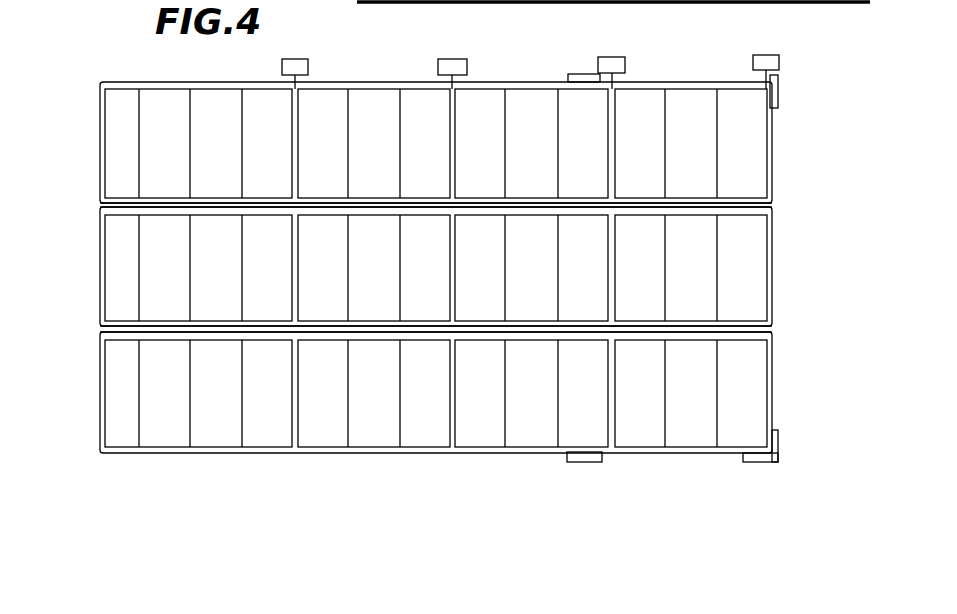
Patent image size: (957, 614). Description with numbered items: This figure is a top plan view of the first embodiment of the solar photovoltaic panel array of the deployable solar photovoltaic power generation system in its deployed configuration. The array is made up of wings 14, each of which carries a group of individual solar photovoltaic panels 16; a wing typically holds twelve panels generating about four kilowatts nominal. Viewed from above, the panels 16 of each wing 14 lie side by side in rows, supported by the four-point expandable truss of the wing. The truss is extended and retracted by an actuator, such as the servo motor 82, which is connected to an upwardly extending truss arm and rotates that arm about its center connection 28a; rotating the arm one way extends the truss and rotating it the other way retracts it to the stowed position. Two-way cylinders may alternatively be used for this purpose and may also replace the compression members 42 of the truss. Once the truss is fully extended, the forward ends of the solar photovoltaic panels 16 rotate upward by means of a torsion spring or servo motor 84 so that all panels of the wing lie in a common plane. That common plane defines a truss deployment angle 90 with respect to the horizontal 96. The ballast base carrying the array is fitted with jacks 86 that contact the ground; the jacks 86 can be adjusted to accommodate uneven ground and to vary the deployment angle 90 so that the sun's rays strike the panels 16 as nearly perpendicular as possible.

The wing 14 is at (96, 117).
The solar photovoltaic panel 16 is at (226, 158).
The servo motor 84 is at (293, 65).
The jack 86 is at (556, 3).
The horizontal 96 is at (427, 3).
The compression member 42 is at (596, 3).
The center connection 28a is at (652, 3).
The servo motor 82 is at (692, 3).
The truss deployment angle 90 is at (812, 3).